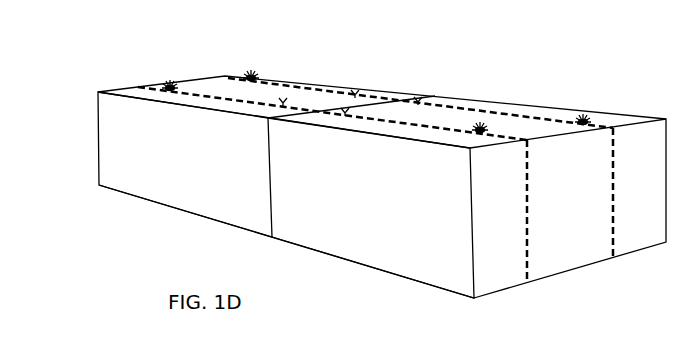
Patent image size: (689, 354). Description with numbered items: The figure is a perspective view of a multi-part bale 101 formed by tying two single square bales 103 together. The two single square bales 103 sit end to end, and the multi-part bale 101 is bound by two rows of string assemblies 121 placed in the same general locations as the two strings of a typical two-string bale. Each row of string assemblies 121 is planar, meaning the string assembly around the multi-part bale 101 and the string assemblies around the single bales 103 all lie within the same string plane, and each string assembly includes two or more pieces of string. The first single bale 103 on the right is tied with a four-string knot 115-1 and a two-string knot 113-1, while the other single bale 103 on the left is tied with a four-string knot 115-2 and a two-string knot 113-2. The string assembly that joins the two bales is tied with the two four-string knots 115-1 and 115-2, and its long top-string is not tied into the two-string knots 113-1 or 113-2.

The multi-part bale 101 is at (80, 147).
The single square bale 103 is at (157, 197).
The two-string knot 113-1 is at (419, 101).
The two-string knot 113-2 is at (356, 94).
The four-string knot 115-1 is at (584, 121).
The four-string knot 115-2 is at (252, 79).
The row of string assemblies 121 is at (528, 283).